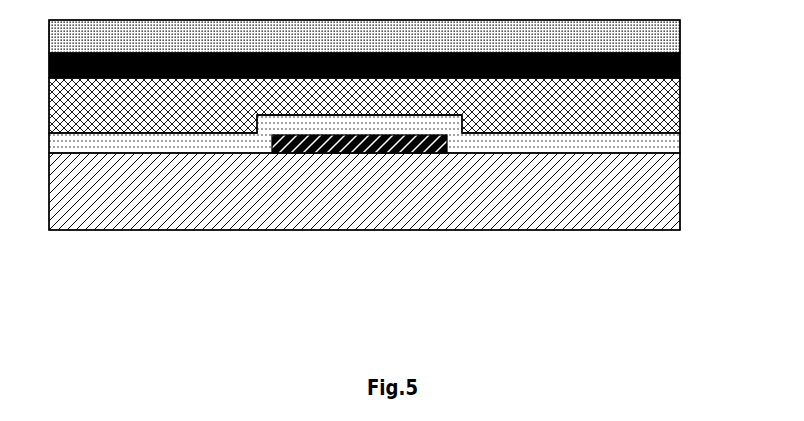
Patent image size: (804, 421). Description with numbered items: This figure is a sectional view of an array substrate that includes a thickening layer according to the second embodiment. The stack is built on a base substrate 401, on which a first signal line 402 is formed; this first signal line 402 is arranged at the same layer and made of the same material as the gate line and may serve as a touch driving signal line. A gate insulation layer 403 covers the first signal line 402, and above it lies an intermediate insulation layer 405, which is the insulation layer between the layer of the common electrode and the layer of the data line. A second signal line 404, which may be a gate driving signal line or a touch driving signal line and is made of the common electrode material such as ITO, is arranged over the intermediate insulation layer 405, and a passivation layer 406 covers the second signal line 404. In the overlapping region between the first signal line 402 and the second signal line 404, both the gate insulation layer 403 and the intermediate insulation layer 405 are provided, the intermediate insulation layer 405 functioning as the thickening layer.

The base substrate 401 is at (660, 191).
The first signal line 402 is at (366, 153).
The gate insulation layer 403 is at (670, 143).
The second signal line 404 is at (680, 62).
The intermediate insulation layer 405 is at (652, 97).
The passivation layer 406 is at (680, 22).